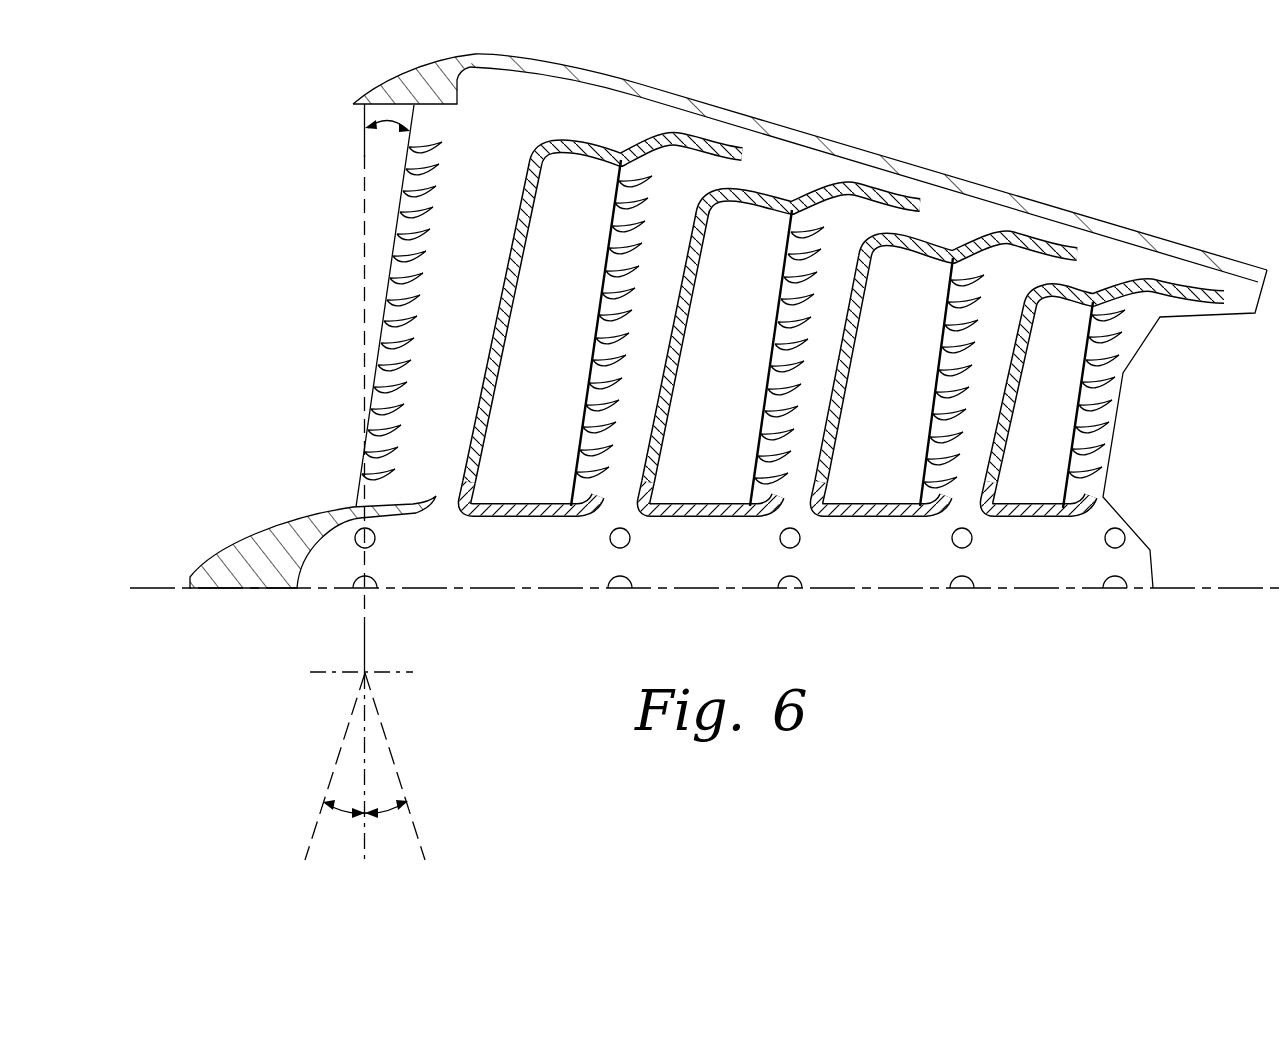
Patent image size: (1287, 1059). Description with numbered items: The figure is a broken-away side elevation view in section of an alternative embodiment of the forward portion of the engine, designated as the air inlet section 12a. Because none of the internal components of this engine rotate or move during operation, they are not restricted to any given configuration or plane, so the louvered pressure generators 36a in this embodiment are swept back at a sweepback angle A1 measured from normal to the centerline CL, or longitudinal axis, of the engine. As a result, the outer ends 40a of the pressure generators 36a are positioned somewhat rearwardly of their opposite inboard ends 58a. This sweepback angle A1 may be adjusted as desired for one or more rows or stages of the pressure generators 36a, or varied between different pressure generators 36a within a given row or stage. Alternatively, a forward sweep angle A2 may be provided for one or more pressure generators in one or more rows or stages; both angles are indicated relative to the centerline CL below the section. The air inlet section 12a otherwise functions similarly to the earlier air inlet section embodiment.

The air inlet section 12a is at (292, 300).
The outer ends 40a is at (364, 115).
The louvered pressure generators 36a is at (393, 248).
The inboard ends 58a is at (355, 500).
The sweepback angle A1 is at (391, 124).
The forward sweep angle A2 is at (348, 805).
The centerline CL is at (150, 587).